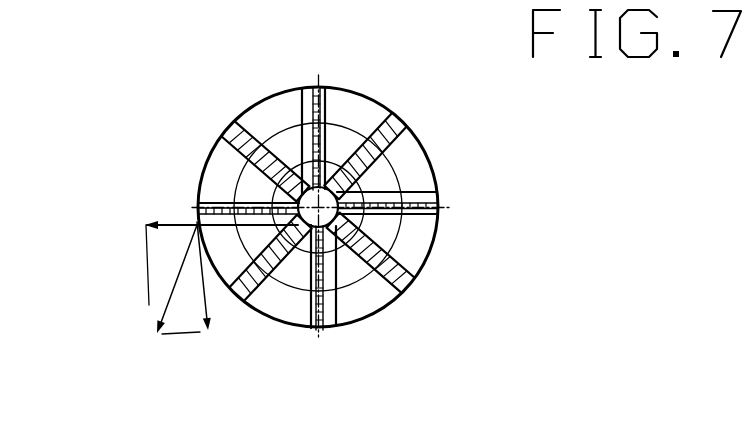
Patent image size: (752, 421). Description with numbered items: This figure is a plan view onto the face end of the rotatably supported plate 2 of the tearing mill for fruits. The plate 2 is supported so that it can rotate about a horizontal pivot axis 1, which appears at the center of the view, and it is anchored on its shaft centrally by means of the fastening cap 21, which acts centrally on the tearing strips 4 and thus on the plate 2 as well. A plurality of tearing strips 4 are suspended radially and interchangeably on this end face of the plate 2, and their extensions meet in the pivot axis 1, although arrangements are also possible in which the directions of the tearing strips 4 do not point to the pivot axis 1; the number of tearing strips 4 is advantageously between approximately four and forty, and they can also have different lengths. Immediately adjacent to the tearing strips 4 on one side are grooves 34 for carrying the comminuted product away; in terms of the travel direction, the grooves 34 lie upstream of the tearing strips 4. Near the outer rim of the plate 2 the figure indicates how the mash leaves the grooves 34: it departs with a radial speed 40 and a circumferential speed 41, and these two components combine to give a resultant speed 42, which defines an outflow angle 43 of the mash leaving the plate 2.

The horizontal axis 1 is at (201, 176).
The plate 2 is at (400, 163).
The tearing strips 4 is at (362, 47).
The fastening cap 21 is at (452, 268).
The grooves 34 is at (285, 358).
The radial speed 40 is at (173, 225).
The circumferential speed 41 is at (209, 303).
The speed 42 is at (162, 316).
The outflow angle 43 is at (148, 292).